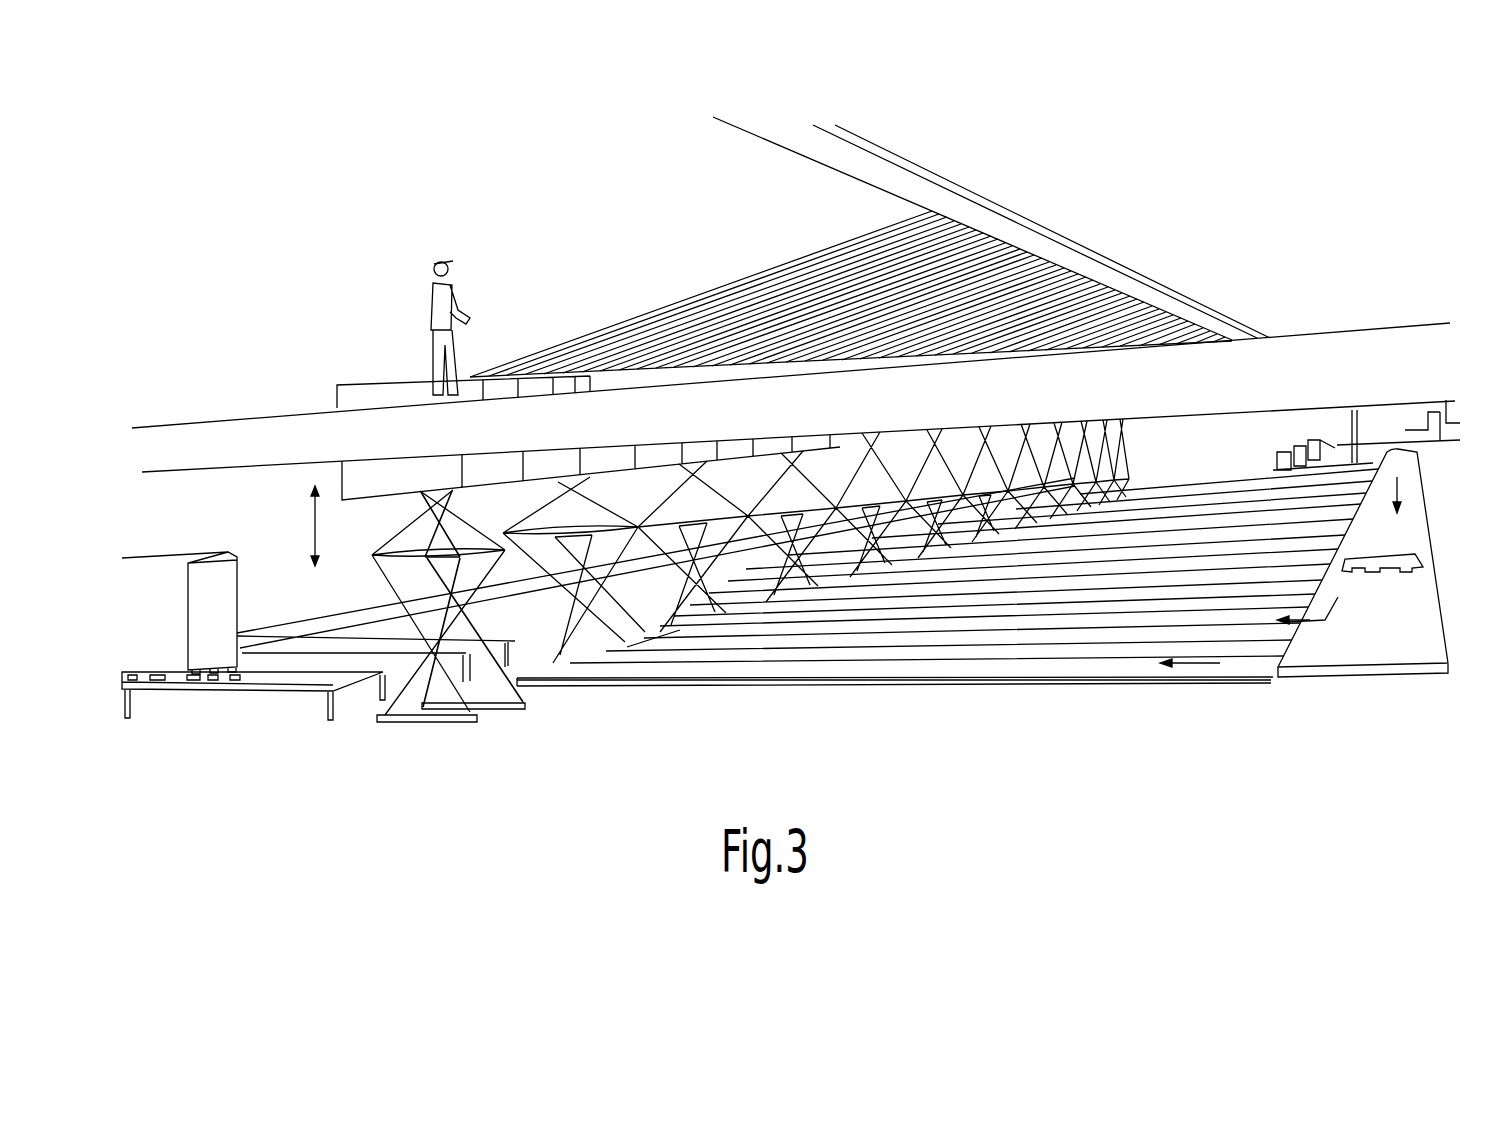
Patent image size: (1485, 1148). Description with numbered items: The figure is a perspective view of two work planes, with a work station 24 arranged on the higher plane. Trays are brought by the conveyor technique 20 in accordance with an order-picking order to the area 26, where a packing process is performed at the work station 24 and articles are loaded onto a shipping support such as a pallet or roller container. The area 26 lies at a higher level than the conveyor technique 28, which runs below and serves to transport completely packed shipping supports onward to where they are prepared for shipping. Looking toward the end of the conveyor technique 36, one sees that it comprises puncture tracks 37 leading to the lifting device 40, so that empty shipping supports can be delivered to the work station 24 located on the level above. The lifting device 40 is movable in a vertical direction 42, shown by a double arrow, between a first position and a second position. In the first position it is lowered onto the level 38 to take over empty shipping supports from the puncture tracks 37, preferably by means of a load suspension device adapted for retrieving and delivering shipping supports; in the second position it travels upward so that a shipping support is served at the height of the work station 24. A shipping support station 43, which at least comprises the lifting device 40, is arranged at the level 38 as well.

The conveyor technique 20 is at (785, 148).
The work station 24 is at (385, 300).
The area 26 is at (1370, 328).
The conveyor technique 28 is at (333, 620).
The conveyor technique 36 is at (1385, 668).
The puncture tracks 37 is at (1067, 673).
The level 38 is at (957, 744).
The lifting device 40 is at (397, 724).
The vertical direction 42 is at (313, 528).
The shipping support station 43 is at (450, 742).